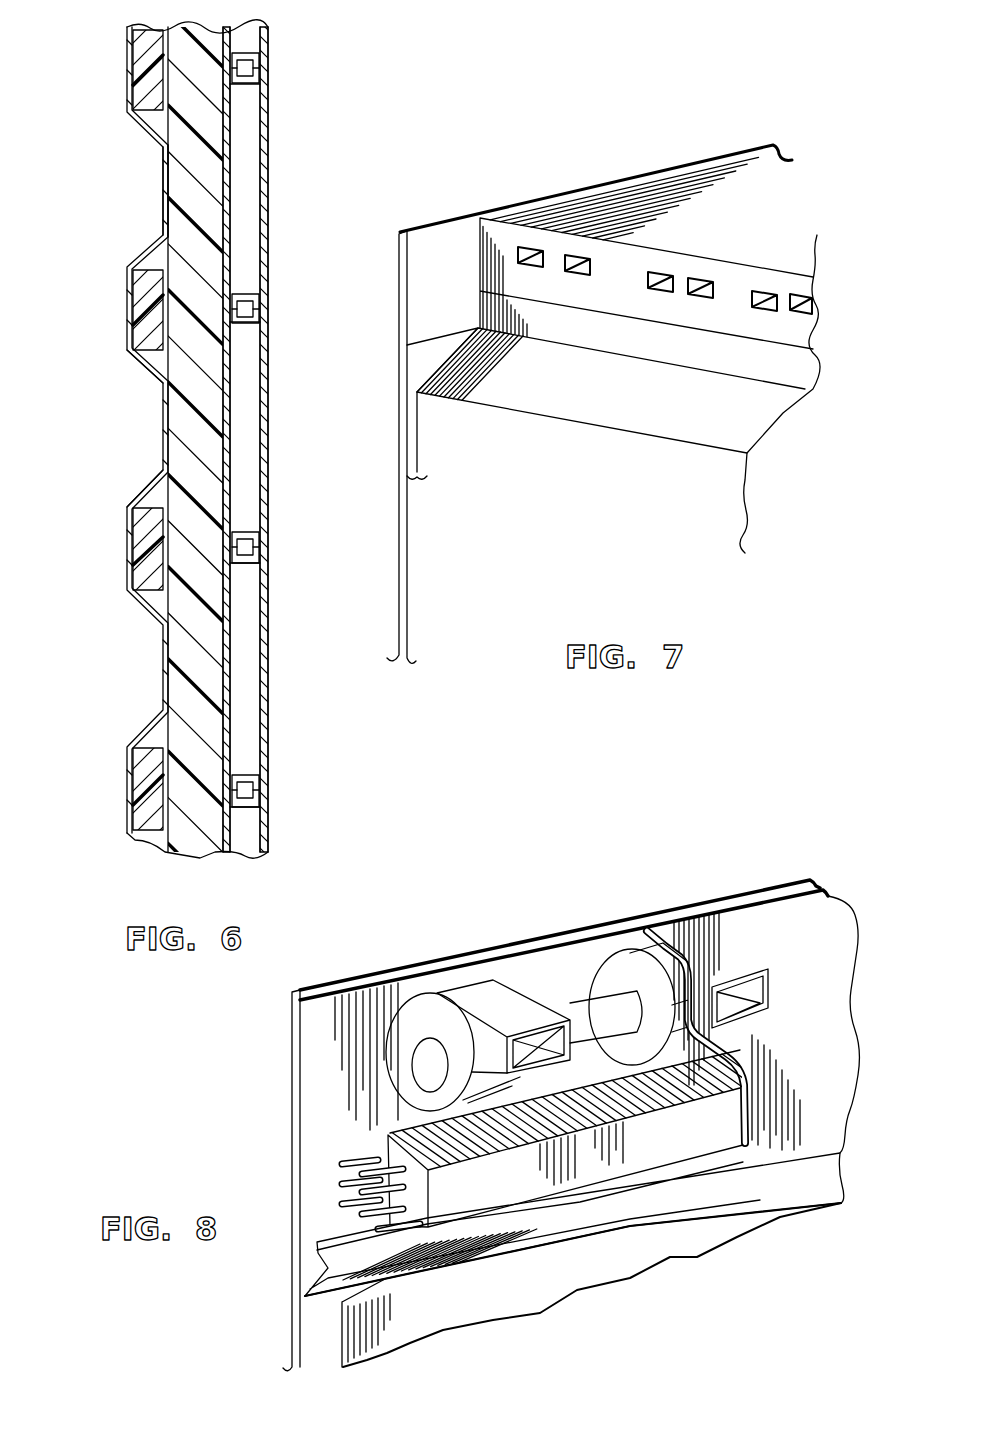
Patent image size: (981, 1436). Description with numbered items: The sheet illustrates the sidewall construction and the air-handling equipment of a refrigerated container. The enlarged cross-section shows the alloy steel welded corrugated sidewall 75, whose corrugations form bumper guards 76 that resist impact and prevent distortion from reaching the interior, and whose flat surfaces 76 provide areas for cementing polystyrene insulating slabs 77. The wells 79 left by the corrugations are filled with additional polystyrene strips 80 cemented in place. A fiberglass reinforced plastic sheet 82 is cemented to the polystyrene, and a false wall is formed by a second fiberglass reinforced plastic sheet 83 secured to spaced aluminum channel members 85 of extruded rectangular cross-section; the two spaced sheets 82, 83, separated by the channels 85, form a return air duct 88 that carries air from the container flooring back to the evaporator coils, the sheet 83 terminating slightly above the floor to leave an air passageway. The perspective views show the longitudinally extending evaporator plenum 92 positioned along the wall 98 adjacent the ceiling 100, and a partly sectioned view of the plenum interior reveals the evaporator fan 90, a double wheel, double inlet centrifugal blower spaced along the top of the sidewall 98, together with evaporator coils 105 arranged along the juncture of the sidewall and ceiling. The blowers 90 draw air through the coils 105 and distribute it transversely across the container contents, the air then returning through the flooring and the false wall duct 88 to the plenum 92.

In FIG. 6, the steel sidewall 75 is at (160, 410).
In FIG. 6, the bumper guards 76 is at (162, 180).
In FIG. 6, the polystyrene insulating slabs 77 is at (217, 365).
In FIG. 6, the wells 79 is at (153, 357).
In FIG. 6, the polystyrene strips 80 is at (137, 285).
In FIG. 6, the fiberglass reinforced plastic sheet 82 is at (230, 432).
In FIG. 6, the fiberglass reinforced plastic sheet 83 is at (265, 643).
In FIG. 6, the aluminum channel members 85 is at (255, 67).
In FIG. 6, the return air duct 88 is at (245, 193).
In FIG. 8, the evaporator fan 90 is at (478, 990).
In FIG. 7, the evaporator plenum 92 is at (732, 414).
In FIG. 8, the evaporator plenum 92 is at (580, 1223).
In FIG. 7, the wall 98 is at (698, 490).
In FIG. 8, the wall 98 is at (478, 1312).
In FIG. 7, the ceiling 100 is at (735, 220).
In FIG. 8, the ceiling 100 is at (571, 1125).
In FIG. 8, the evaporator coils 105 is at (388, 1135).